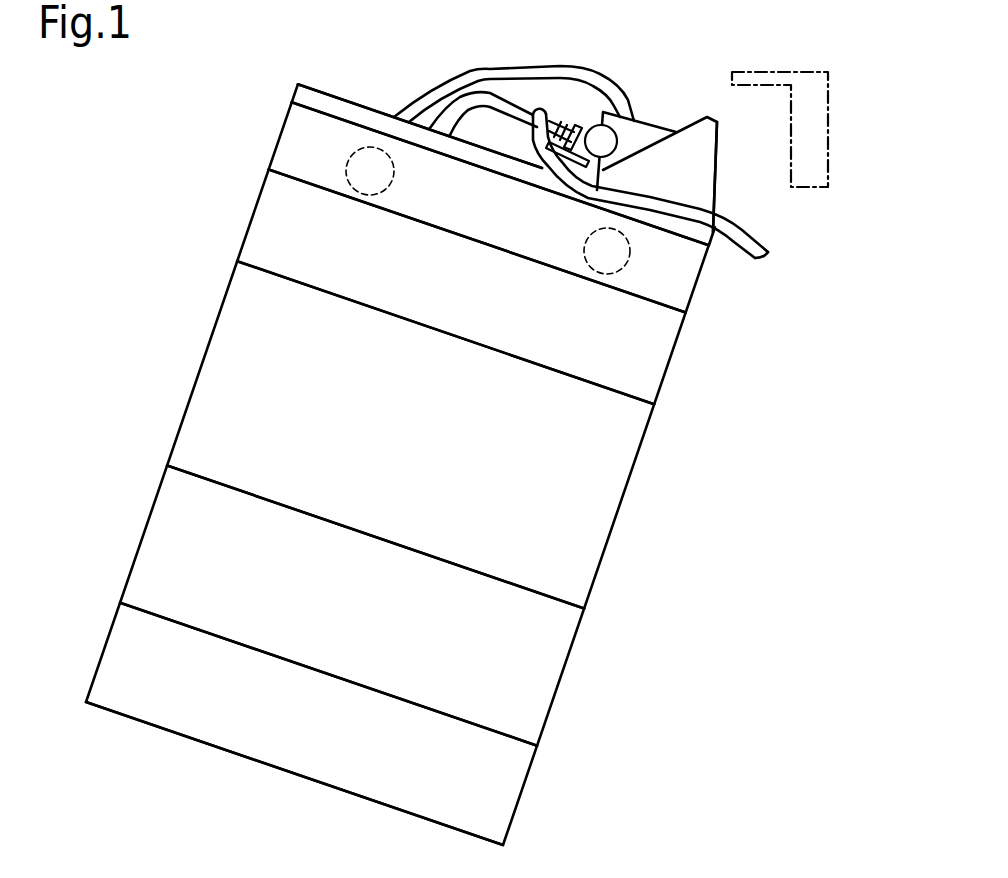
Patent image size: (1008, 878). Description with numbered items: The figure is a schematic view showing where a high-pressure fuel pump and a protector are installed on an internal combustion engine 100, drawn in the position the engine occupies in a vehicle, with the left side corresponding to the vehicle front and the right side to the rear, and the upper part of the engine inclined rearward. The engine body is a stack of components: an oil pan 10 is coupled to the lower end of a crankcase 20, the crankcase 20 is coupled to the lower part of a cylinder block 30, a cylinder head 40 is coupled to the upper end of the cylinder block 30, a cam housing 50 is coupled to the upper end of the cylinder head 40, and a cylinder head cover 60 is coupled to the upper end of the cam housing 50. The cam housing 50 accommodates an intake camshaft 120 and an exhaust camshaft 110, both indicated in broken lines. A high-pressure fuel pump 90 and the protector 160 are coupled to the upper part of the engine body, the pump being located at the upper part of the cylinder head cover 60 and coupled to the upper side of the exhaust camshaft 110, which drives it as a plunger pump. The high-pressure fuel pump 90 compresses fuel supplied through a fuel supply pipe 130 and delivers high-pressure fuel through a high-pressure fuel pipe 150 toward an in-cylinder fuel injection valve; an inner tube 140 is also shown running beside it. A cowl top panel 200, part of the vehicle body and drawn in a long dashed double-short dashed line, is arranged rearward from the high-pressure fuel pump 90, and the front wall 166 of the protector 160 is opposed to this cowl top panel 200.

The internal combustion engine 100 is at (93, 141).
The oil pan 10 is at (520, 800).
The crankcase 20 is at (556, 686).
The cylinder block 30 is at (617, 505).
The cylinder head 40 is at (668, 360).
The cam housing 50 is at (292, 131).
The cylinder head cover 60 is at (312, 93).
The high-pressure fuel pump 90 is at (652, 127).
The exhaust camshaft 110 is at (590, 236).
The intake camshaft 120 is at (394, 174).
The fuel supply pipe 130 is at (755, 238).
The inner tube 140 is at (468, 105).
The high-pressure fuel pipe 150 is at (552, 66).
The protector 160 is at (690, 177).
The front wall 166 is at (716, 134).
The cowl top panel 200 is at (783, 72).